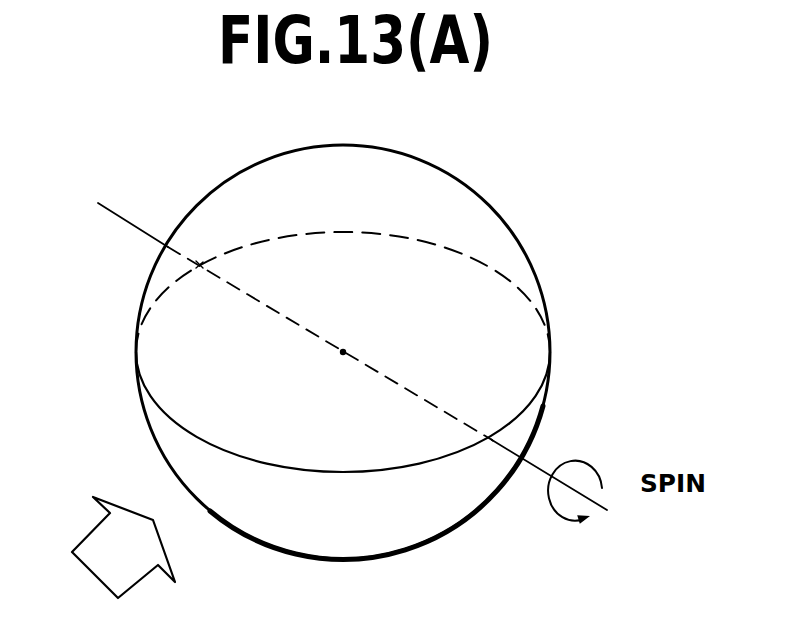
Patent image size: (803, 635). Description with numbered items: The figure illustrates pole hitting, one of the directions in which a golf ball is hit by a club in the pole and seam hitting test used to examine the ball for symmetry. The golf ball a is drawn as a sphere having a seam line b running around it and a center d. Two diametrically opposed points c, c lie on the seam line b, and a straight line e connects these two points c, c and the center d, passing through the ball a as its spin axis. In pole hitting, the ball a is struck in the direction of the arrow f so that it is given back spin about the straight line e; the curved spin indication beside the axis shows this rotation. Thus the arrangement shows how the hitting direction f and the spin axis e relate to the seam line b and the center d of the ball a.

The golf ball a is at (518, 267).
The seam line b is at (463, 458).
The diametrically opposed points c is at (199, 265).
The center d is at (350, 347).
The straight line e is at (137, 227).
The arrow f is at (116, 554).